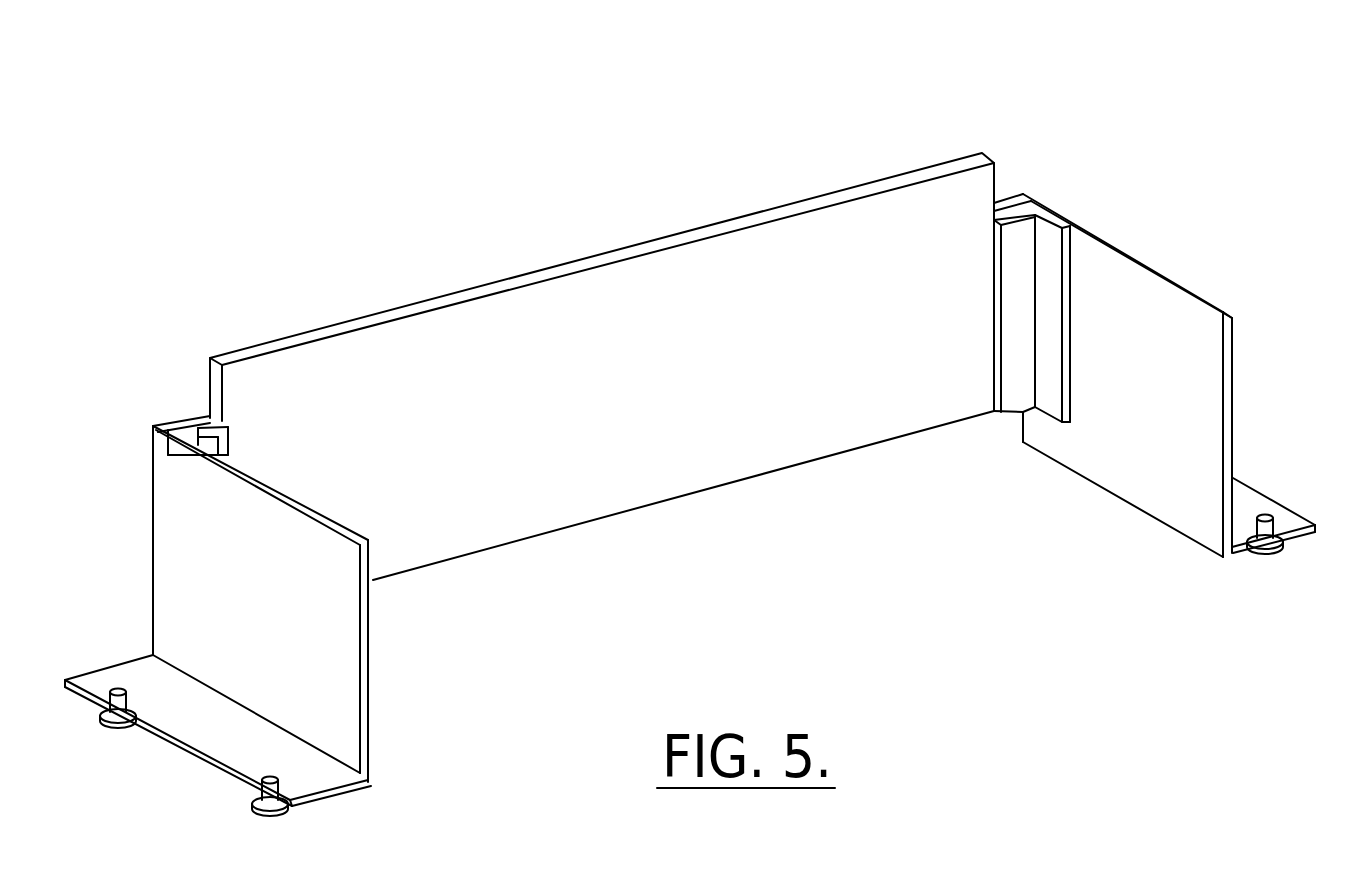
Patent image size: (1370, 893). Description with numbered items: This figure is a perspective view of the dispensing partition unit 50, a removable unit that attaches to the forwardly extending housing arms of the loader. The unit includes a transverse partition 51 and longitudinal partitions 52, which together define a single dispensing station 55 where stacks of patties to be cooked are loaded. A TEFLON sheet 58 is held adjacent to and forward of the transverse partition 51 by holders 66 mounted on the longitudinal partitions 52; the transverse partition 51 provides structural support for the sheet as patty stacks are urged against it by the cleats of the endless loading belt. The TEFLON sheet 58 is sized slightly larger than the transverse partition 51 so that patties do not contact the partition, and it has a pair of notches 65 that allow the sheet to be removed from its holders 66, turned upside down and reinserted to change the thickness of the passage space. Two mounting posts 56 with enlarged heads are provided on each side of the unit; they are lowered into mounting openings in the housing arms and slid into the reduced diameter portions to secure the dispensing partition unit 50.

The dispensing partition unit 50 is at (705, 481).
The transverse partition 51 is at (218, 595).
The longitudinal partition 52 is at (690, 500).
The dispensing station 55 is at (694, 481).
The mounting post 56 is at (118, 690).
The TEFLON sheet 58 is at (637, 289).
The notch 65 is at (604, 276).
The holder 66 is at (232, 446).